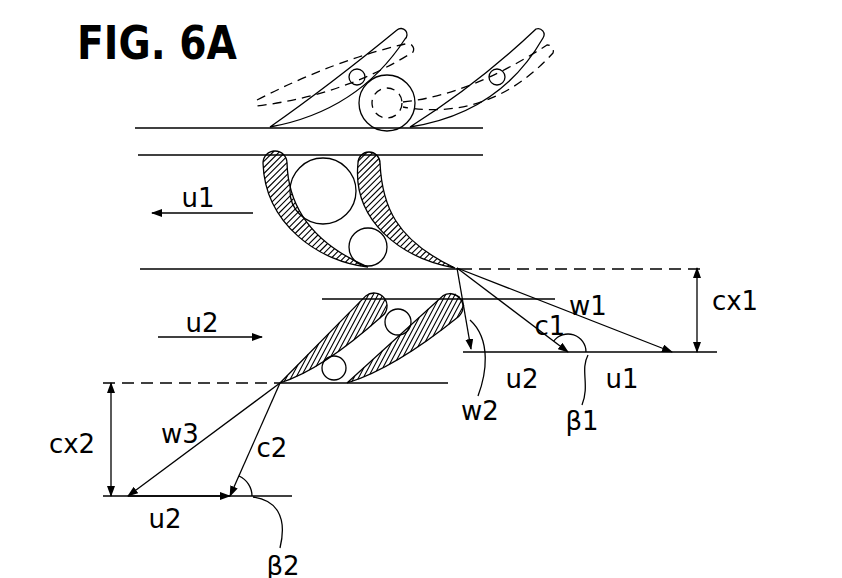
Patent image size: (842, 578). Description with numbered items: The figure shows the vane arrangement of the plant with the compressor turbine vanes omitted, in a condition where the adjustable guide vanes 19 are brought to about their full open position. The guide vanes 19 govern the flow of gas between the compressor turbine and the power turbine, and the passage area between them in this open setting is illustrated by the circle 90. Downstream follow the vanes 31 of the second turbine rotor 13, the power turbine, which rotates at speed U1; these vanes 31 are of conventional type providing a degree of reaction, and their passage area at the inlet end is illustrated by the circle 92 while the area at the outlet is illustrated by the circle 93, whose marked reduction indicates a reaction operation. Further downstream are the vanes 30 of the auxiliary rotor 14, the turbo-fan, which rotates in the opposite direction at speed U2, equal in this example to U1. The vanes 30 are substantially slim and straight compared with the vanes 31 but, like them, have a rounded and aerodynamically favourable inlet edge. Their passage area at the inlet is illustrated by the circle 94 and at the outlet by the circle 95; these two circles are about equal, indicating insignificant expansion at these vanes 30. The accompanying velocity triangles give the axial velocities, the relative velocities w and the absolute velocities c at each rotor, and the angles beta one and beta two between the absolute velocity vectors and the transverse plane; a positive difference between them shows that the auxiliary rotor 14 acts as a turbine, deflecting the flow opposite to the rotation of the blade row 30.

The adjustable guide vanes 19 is at (545, 29).
The circle 90 is at (413, 78).
The circle 92 is at (335, 172).
The circle 93 is at (355, 240).
The vanes 31 is at (392, 220).
The second turbine rotor 13 is at (548, 211).
The auxiliary rotor 14 is at (130, 314).
The circle 94 is at (398, 320).
The circle 95 is at (333, 366).
The vanes 30 is at (403, 335).